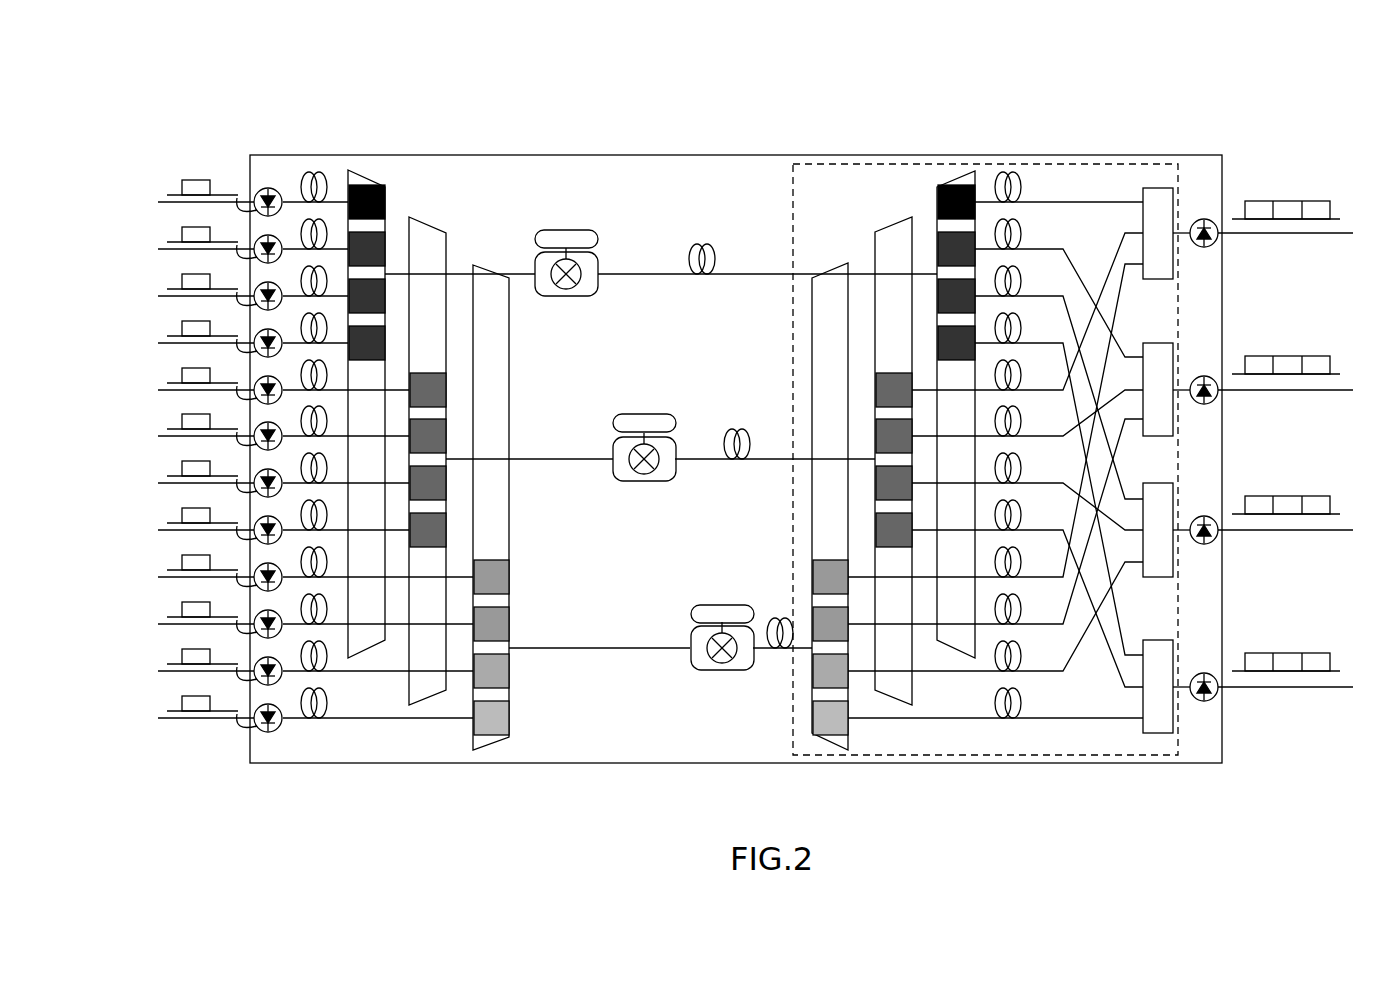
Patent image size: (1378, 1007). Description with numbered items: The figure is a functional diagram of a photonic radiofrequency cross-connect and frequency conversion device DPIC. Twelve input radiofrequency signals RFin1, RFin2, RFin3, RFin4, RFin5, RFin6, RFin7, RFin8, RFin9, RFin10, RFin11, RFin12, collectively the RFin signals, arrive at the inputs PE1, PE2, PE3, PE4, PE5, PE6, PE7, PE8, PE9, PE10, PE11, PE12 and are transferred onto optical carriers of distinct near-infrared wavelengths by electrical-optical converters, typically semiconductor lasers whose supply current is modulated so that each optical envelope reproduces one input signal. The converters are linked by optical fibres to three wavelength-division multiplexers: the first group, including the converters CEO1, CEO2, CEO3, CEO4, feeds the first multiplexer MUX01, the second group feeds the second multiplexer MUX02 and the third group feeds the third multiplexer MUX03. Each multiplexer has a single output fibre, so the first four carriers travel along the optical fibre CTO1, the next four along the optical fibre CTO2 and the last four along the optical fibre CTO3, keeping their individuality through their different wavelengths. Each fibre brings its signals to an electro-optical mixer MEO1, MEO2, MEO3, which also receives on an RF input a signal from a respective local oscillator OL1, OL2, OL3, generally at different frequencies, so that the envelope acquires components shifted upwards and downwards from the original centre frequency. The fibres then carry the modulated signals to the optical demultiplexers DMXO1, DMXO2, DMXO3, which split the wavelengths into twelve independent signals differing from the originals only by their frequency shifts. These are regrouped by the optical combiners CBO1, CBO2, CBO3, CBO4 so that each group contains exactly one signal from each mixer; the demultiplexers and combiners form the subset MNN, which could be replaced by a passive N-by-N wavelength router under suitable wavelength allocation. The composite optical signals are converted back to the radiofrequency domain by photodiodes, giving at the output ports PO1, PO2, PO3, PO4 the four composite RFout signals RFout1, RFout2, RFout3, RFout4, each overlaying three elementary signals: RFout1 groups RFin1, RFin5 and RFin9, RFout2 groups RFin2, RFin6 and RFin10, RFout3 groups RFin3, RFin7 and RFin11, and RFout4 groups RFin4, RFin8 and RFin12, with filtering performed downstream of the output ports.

The input radiofrequency signal RFin is at (193, 135).
The output radiofrequency signal RFout is at (1294, 155).
The input PE1 is at (166, 204).
The input PE2 is at (166, 251).
The input PE3 is at (166, 298).
The input PE4 is at (166, 345).
The input PE5 is at (166, 392).
The input PE6 is at (166, 438).
The input PE7 is at (166, 485).
The input PE8 is at (166, 532).
The input PE9 is at (166, 579).
The input PE10 is at (166, 626).
The input PE11 is at (166, 673).
The input PE12 is at (166, 720).
The radiofrequency signal RFin1 is at (204, 179).
The radiofrequency signal RFin2 is at (204, 226).
The radiofrequency signal RFin3 is at (204, 273).
The radiofrequency signal RFin4 is at (204, 320).
The radiofrequency signal RFin5 is at (204, 367).
The radiofrequency signal RFin6 is at (204, 413).
The radiofrequency signal RFin7 is at (204, 460).
The radiofrequency signal RFin8 is at (204, 507).
The radiofrequency signal RFin9 is at (204, 554).
The radiofrequency signal RFin10 is at (208, 601).
The radiofrequency signal RFin11 is at (208, 648).
The radiofrequency signal RFin12 is at (208, 695).
The first multiplexer MUX01 is at (374, 172).
The second multiplexer MUX02 is at (426, 217).
The third multiplexer MUX03 is at (479, 266).
The local oscillator OL1 is at (598, 240).
The local oscillator OL2 is at (675, 426).
The local oscillator OL3 is at (724, 605).
The electro-optical mixer MEO1 is at (568, 297).
The electro-optical mixer MEO2 is at (646, 481).
The electro-optical mixer MEO3 is at (716, 672).
The optical fibre CTO1 is at (750, 274).
The optical fibre CTO2 is at (780, 462).
The optical fibre CTO3 is at (795, 652).
The optical demultiplexer DMXO1 is at (948, 174).
The optical demultiplexer DMXO2 is at (888, 228).
The optical demultiplexer DMXO3 is at (834, 276).
The optical combiner CBO1 is at (1150, 187).
The optical combiner CBO2 is at (1158, 343).
The optical combiner CBO3 is at (1158, 483).
The optical combiner CBO4 is at (1158, 640).
The electrical-optical converter CEO1 is at (1208, 218).
The electrical-optical converter CEO2 is at (1204, 376).
The electrical-optical converter CEO3 is at (1204, 516).
The electrical-optical converter CEO4 is at (1204, 674).
The output signal RFout1 is at (1286, 200).
The output signal RFout2 is at (1286, 355).
The output signal RFout3 is at (1286, 495).
The output signal RFout4 is at (1286, 652).
The output port PO1 is at (1333, 236).
The output port PO2 is at (1333, 393).
The output port PO3 is at (1333, 533).
The output port PO4 is at (1333, 690).
The photonic cross-connect and frequency conversion device DPIC is at (530, 782).
The subset of demultiplexers and combiners MNN is at (937, 757).